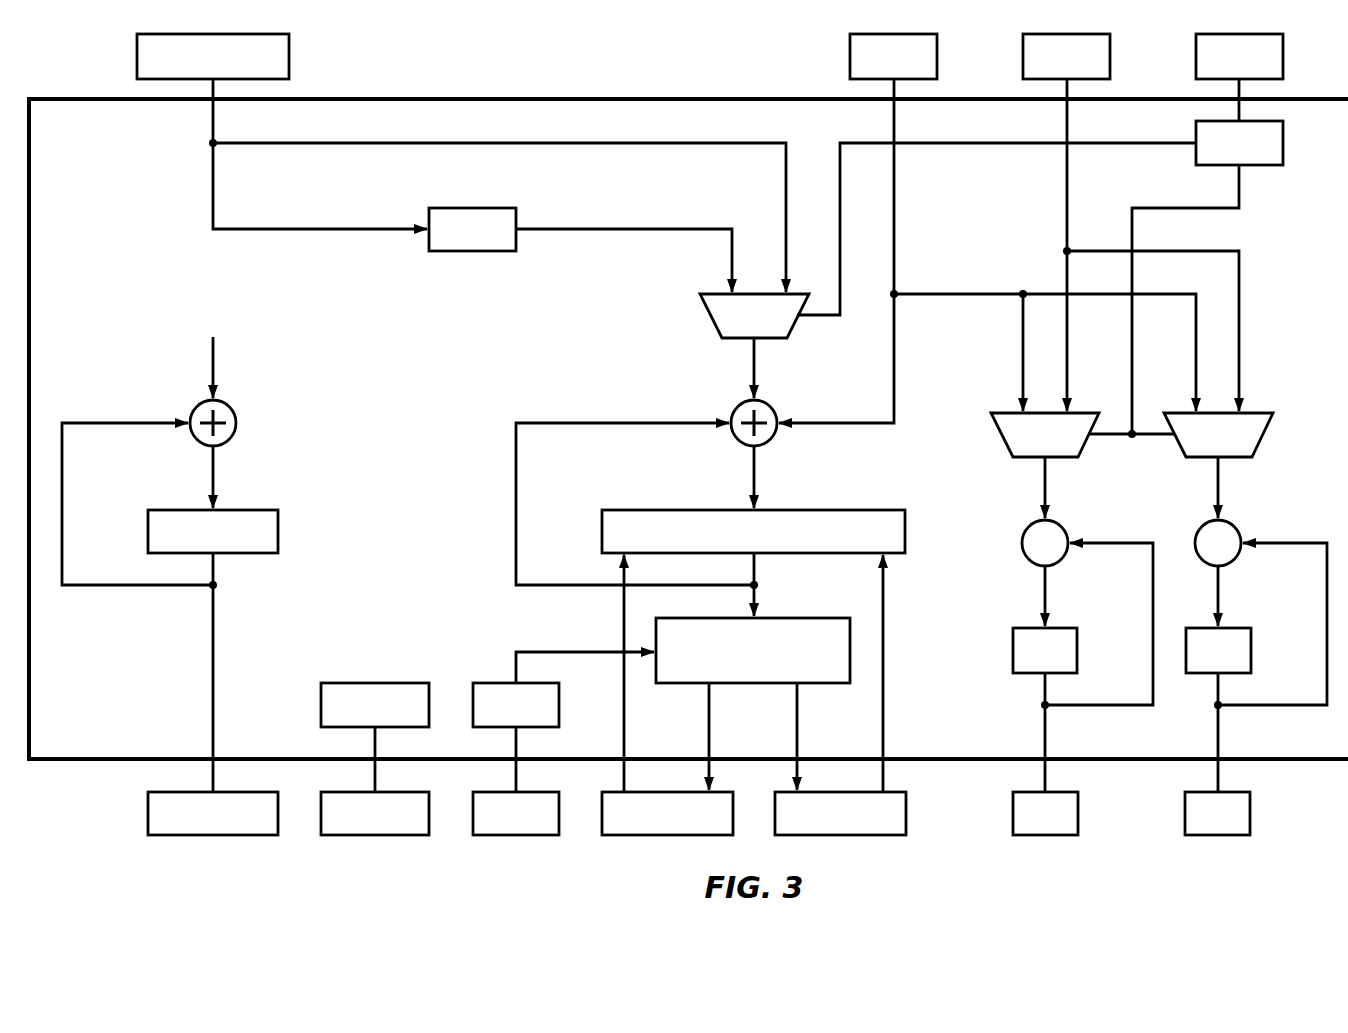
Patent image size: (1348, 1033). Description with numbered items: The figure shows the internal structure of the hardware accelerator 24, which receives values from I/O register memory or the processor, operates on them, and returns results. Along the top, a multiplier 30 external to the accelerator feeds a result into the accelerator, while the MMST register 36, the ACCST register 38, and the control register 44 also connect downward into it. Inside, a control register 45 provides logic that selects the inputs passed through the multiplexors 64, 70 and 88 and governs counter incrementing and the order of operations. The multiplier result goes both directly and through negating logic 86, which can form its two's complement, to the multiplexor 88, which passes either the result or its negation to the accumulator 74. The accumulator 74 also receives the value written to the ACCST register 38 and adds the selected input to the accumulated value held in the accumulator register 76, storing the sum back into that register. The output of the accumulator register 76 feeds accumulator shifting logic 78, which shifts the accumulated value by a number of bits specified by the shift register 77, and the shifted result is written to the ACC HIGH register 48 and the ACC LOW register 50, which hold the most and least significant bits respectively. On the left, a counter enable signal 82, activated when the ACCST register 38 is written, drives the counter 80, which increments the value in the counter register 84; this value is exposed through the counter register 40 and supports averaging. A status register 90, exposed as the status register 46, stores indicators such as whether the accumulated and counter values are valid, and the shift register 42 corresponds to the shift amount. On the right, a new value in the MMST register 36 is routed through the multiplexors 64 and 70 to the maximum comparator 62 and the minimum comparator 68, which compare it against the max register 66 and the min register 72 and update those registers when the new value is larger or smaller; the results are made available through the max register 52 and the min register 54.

The hardware accelerator 24 is at (605, 96).
The multiplier 30 is at (137, 56).
The maximum/minimum store (MMST) register 36 is at (1110, 57).
The accumulator store (ACCST) register 38 is at (937, 57).
The counter register 40 is at (200, 835).
The shift register 42 is at (503, 835).
The control register (CR) 44 is at (1283, 57).
The control register 45 is at (1283, 143).
The status register 46 is at (362, 835).
The accumulator high (ACC HIGH) register 48 is at (655, 835).
The accumulator low (ACC LOW) register 50 is at (850, 835).
The max register 52 is at (1055, 835).
The min register 54 is at (1228, 835).
The maximum comparator 62 is at (1062, 559).
The multiplexor 64 is at (1088, 446).
The max register 66 is at (1077, 651).
The minimum comparator 68 is at (1235, 559).
The multiplexor 70 is at (1261, 446).
The min register 72 is at (1251, 651).
The accumulator 74 is at (742, 443).
The accumulator register 76 is at (602, 530).
The shift register 77 is at (495, 683).
The accumulator shifting logic 78 is at (690, 683).
The counter 80 is at (200, 443).
The counter enable signal 82 is at (128, 322).
The counter register 84 is at (148, 531).
The negating logic 86 is at (470, 208).
The multiplexor 88 is at (713, 324).
The status register 90 is at (321, 706).